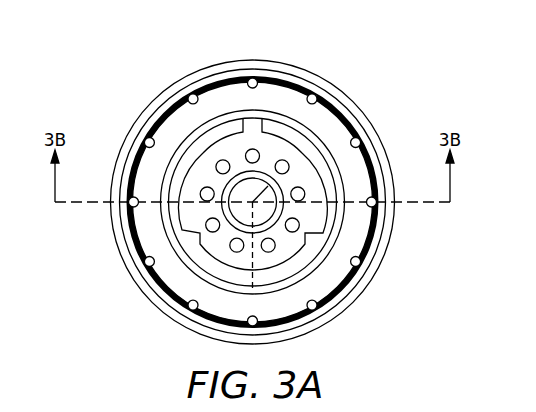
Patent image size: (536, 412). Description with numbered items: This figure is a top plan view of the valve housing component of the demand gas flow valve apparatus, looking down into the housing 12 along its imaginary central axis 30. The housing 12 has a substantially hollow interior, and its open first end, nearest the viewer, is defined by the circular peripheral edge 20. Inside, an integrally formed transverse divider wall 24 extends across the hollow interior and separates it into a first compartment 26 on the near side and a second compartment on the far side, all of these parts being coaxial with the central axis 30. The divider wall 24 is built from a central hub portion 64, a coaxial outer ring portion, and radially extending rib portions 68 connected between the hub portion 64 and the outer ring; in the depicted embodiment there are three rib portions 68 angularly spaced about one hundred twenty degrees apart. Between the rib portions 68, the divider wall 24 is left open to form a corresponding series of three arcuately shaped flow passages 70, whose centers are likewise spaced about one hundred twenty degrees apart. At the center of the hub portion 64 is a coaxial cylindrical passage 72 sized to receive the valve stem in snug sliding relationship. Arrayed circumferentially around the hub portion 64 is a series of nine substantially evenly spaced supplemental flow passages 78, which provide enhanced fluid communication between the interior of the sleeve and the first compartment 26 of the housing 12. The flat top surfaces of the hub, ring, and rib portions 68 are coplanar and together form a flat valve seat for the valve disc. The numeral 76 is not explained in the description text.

The housing 12 is at (335, 322).
The peripheral edge 20 is at (254, 205).
The transverse divider wall 24 is at (239, 98).
The first compartment 26 is at (150, 264).
The imaginary central axis 30 is at (137, 187).
The central hub portion 64 is at (242, 206).
The rib portions 68 is at (285, 160).
The flow passages 70 is at (370, 131).
The central opening or cylindrical passage 72 is at (233, 273).
The inner ring 76 is at (347, 186).
The supplemental flow passages 78 is at (186, 96).